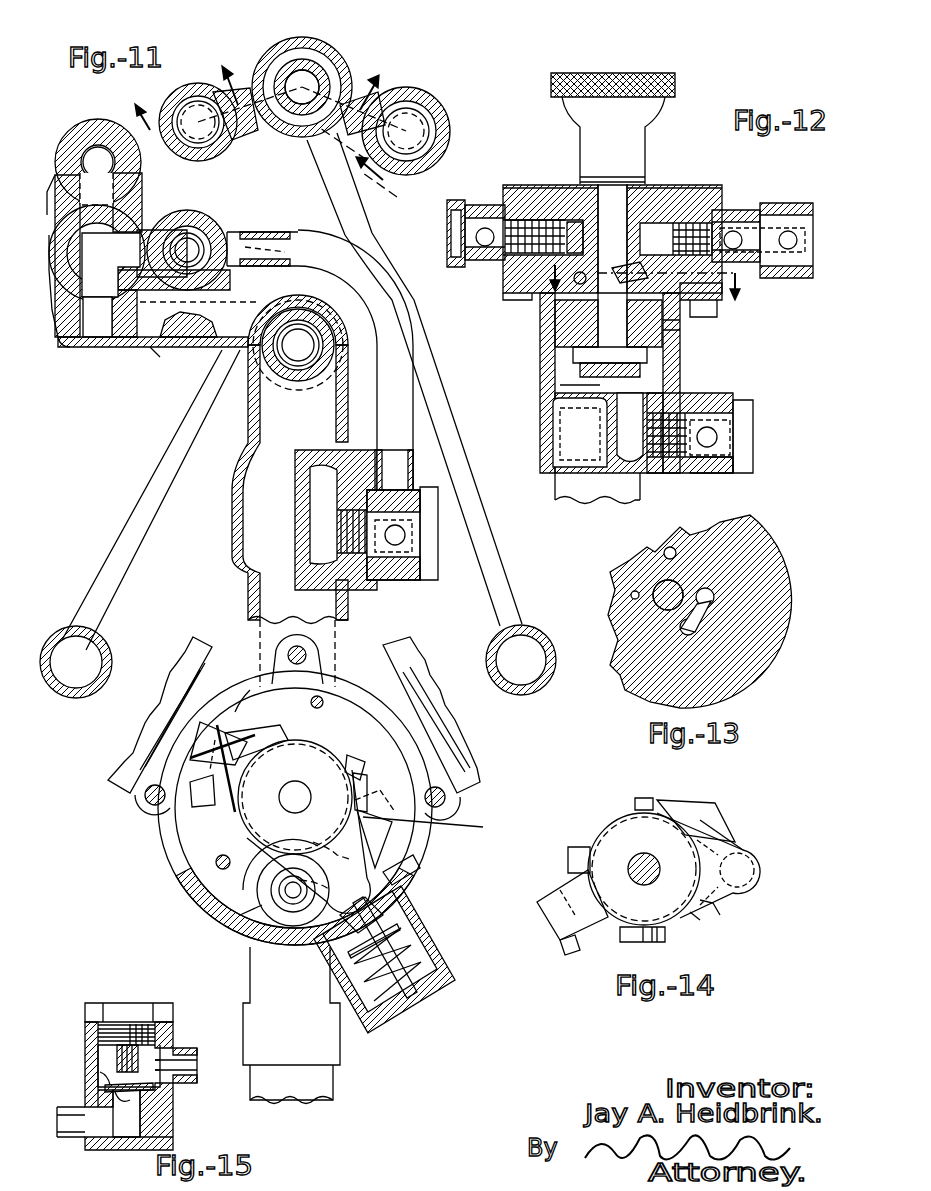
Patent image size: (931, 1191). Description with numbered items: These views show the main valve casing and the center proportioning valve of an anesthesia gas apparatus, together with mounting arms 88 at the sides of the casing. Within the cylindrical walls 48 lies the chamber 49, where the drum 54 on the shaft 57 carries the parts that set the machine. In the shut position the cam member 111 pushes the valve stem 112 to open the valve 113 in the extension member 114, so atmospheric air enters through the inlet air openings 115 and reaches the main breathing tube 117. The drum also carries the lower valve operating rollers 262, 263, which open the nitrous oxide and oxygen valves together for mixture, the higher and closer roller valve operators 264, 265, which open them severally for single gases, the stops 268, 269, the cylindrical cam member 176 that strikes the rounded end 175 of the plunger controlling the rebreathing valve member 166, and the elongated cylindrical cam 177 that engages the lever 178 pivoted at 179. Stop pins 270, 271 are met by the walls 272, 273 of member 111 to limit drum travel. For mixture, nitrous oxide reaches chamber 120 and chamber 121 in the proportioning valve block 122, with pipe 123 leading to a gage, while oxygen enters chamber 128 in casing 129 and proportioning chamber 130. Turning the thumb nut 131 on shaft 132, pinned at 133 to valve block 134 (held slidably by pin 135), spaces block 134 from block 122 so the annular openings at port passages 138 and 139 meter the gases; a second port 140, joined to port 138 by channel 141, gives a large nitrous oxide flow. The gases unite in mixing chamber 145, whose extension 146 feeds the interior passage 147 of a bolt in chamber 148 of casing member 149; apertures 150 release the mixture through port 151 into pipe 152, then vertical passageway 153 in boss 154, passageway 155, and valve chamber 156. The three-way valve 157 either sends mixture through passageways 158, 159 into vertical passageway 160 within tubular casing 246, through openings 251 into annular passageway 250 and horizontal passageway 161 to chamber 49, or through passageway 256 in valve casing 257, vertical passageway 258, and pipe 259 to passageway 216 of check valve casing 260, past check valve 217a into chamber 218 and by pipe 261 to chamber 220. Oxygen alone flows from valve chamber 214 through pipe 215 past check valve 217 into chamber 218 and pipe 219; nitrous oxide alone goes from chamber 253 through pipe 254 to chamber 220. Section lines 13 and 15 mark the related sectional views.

In FIG. 12, the section line 13— 13 is at (647, 289).
In FIG. 11, the section lines 15— 15 is at (286, 141).
In FIG. 11, the cylindrical walls 48 is at (212, 883).
In FIG. 11, the chamber 49 is at (392, 850).
In FIG. 11, the drum 54 is at (295, 797).
In FIG. 14, the drum 54 is at (605, 830).
In FIG. 11, the shaft 57 is at (290, 800).
In FIG. 14, the shaft 57 is at (642, 853).
In FIG. 11, the mounting arm 88 is at (458, 752).
In FIG. 11, the cam member 111 is at (415, 868).
In FIG. 11, the valve stem 112 is at (340, 915).
In FIG. 11, the valve 113 is at (410, 918).
In FIG. 11, the extension member 114 is at (443, 975).
In FIG. 11, the inlet air openings 115 is at (430, 950).
In FIG. 11, the main breathing tube 117 is at (258, 982).
In FIG. 12, the chamber 120 is at (790, 203).
In FIG. 12, the chamber 121 is at (660, 225).
In FIG. 12, the proportioning valve block 122 is at (655, 195).
In FIG. 13, the proportioning valve block 122 is at (767, 687).
In FIG. 12, the pipe 123 is at (737, 210).
In FIG. 12, the chamber 128 is at (482, 200).
In FIG. 12, the casing 129 is at (485, 262).
In FIG. 12, the proportioning chamber 130 is at (572, 222).
In FIG. 12, the thumb (hand nut) 131 is at (677, 84).
In FIG. 13, the shaft (valve stem) 132 is at (655, 588).
In FIG. 12, the pin 133 is at (650, 357).
In FIG. 12, the valve block 134 is at (598, 318).
In FIG. 13, the pin 135 is at (665, 552).
In FIG. 12, the port passage 138 is at (682, 330).
In FIG. 13, the port passage 138 is at (714, 595).
In FIG. 12, the port passage 139 is at (572, 284).
In FIG. 13, the port passage 139 is at (631, 595).
In FIG. 13, the second port 140 is at (695, 632).
In FIG. 12, the channel 141 is at (628, 275).
In FIG. 13, the channel 141 is at (700, 613).
In FIG. 12, the mixing chamber 145 is at (660, 380).
In FIG. 11, the extension of mixing chamber 146 is at (317, 525).
In FIG. 12, the extension of mixing chamber 146 is at (622, 432).
In FIG. 11, the interior passage 147 is at (413, 535).
In FIG. 12, the interior passage 147 is at (735, 443).
In FIG. 11, the chamber 148 is at (433, 517).
In FIG. 12, the chamber 148 is at (722, 475).
In FIG. 11, the casing member 149 is at (407, 582).
In FIG. 12, the casing member 149 is at (732, 395).
In FIG. 11, the apertures 150 is at (395, 540).
In FIG. 12, the apertures 150 is at (717, 437).
In FIG. 11, the port 151 is at (390, 500).
In FIG. 11, the pipe 152 is at (400, 323).
In FIG. 11, the vertical passageway 153 is at (198, 250).
In FIG. 11, the boss 154 is at (207, 238).
In FIG. 11, the passageway 155 is at (175, 232).
In FIG. 11, the valve chamber 156 is at (62, 327).
In FIG. 11, the three-way valve 157 is at (168, 326).
In FIG. 11, the passageway 158 is at (99, 322).
In FIG. 11, the passageway 159 is at (172, 344).
In FIG. 11, the vertical passageway 160 is at (288, 352).
In FIG. 11, the horizontal passageway 161 is at (278, 410).
In FIG. 12, the horizontal passageway 161 is at (548, 455).
In FIG. 11, the valve member 166 is at (262, 915).
In FIG. 11, the rounded end 175 is at (293, 900).
In FIG. 11, the cylindrical cam member 176 is at (483, 827).
In FIG. 14, the cylindrical cam member 176 is at (722, 810).
In FIG. 11, the elongated cylindrical cam 177 is at (203, 757).
In FIG. 14, the elongated cylindrical cam 177 is at (572, 945).
In FIG. 11, the lever 178 is at (237, 705).
In FIG. 11, the pivot 179 is at (183, 788).
In FIG. 11, the valve chamber 214 is at (95, 668).
In FIG. 11, the pipe 215 is at (112, 535).
In FIG. 15, the passageway 216 is at (137, 1125).
In FIG. 11, the check valve 217 is at (445, 122).
In FIG. 15, the check valve 217 is at (157, 1097).
In FIG. 11, the check valve 217a is at (236, 90).
In FIG. 15, the check valve 217a is at (103, 1075).
In FIG. 11, the chamber 218 is at (363, 105).
In FIG. 15, the chamber 218 is at (105, 1053).
In FIG. 11, the pipe 219 is at (347, 97).
In FIG. 15, the pipe 219 is at (218, 1040).
In FIG. 11, the chamber 220 is at (323, 62).
In FIG. 11, the tubular casing 246 is at (334, 349).
In FIG. 11, the annular passageway 250 is at (305, 266).
In FIG. 11, the openings 251 is at (302, 372).
In FIG. 11, the chamber 253 is at (530, 655).
In FIG. 11, the pipe 254 is at (488, 565).
In FIG. 11, the passageway 256 is at (55, 185).
In FIG. 11, the valve casing 257 is at (96, 128).
In FIG. 11, the vertical passageway 258 is at (132, 125).
In FIG. 11, the pipe 259 is at (190, 110).
In FIG. 15, the pipe 259 is at (60, 1108).
In FIG. 11, the check valve casing 260 is at (233, 153).
In FIG. 11, the pipe 261 is at (288, 50).
In FIG. 15, the pipe 261 is at (185, 1068).
In FIG. 11, the valve operating roller 262 is at (368, 795).
In FIG. 14, the valve operating roller 262 is at (682, 805).
In FIG. 11, the valve operating roller 263 is at (282, 728).
In FIG. 14, the valve operating roller 263 is at (577, 845).
In FIG. 11, the roller valve operator 264 is at (240, 915).
In FIG. 14, the roller valve operator 264 is at (692, 917).
In FIG. 11, the roller valve operator 265 is at (232, 818).
In FIG. 14, the roller valve operator 265 is at (622, 942).
In FIG. 11, the stop 268 is at (350, 755).
In FIG. 14, the stop 268 is at (651, 782).
In FIG. 11, the stop 269 is at (248, 765).
In FIG. 14, the stop 269 is at (557, 897).
In FIG. 11, the stop pin 270 is at (325, 697).
In FIG. 11, the stop pin 271 is at (217, 862).
In FIG. 11, the wall 272 is at (395, 822).
In FIG. 14, the wall 272 is at (718, 837).
In FIG. 11, the wall 273 is at (307, 883).
In FIG. 14, the wall 273 is at (713, 903).